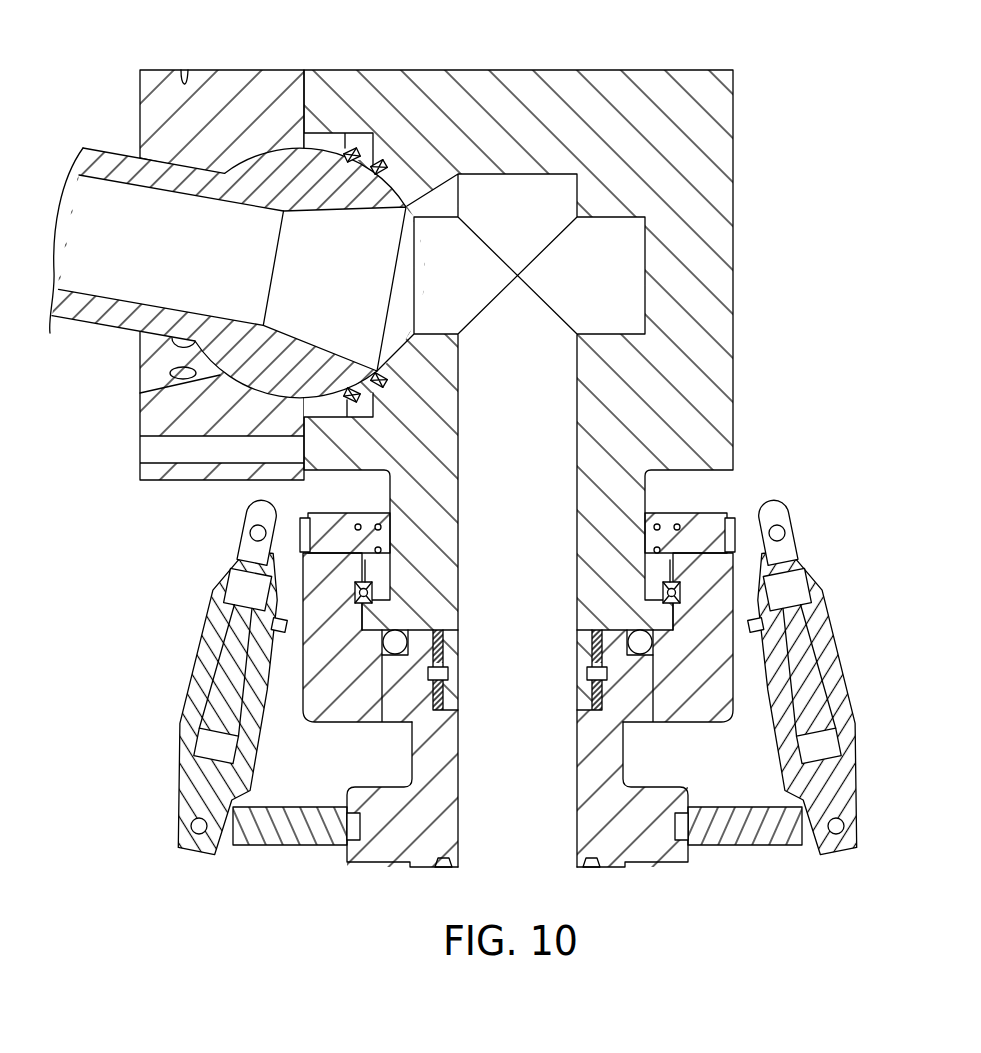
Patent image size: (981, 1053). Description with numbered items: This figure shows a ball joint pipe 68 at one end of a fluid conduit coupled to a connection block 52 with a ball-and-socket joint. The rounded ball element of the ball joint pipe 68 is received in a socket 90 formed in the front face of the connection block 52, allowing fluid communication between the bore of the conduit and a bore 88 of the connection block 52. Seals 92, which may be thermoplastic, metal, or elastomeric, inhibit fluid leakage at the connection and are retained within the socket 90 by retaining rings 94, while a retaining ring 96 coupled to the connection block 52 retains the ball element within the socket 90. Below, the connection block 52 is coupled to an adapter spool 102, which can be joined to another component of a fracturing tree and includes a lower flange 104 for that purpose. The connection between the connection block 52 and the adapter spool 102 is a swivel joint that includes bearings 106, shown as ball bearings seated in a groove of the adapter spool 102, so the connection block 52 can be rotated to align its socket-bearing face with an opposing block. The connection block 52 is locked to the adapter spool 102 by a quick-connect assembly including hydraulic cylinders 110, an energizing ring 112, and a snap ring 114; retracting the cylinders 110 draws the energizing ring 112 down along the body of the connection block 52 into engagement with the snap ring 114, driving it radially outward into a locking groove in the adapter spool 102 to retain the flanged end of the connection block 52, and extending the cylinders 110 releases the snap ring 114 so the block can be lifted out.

The connection block 52 is at (734, 162).
The ball joint pipe 68 is at (101, 147).
The bore 88 is at (459, 492).
The socket 90 is at (392, 192).
The seals 92 is at (386, 164).
The retaining rings 94 is at (354, 148).
The retaining ring 96 is at (204, 72).
The adapter spool 102 is at (735, 670).
The lower flange 104 is at (636, 867).
The bearings 106 is at (395, 656).
The hydraulic cylinders 110 is at (195, 700).
The energizing ring 112 is at (697, 513).
The snap ring 114 is at (673, 590).